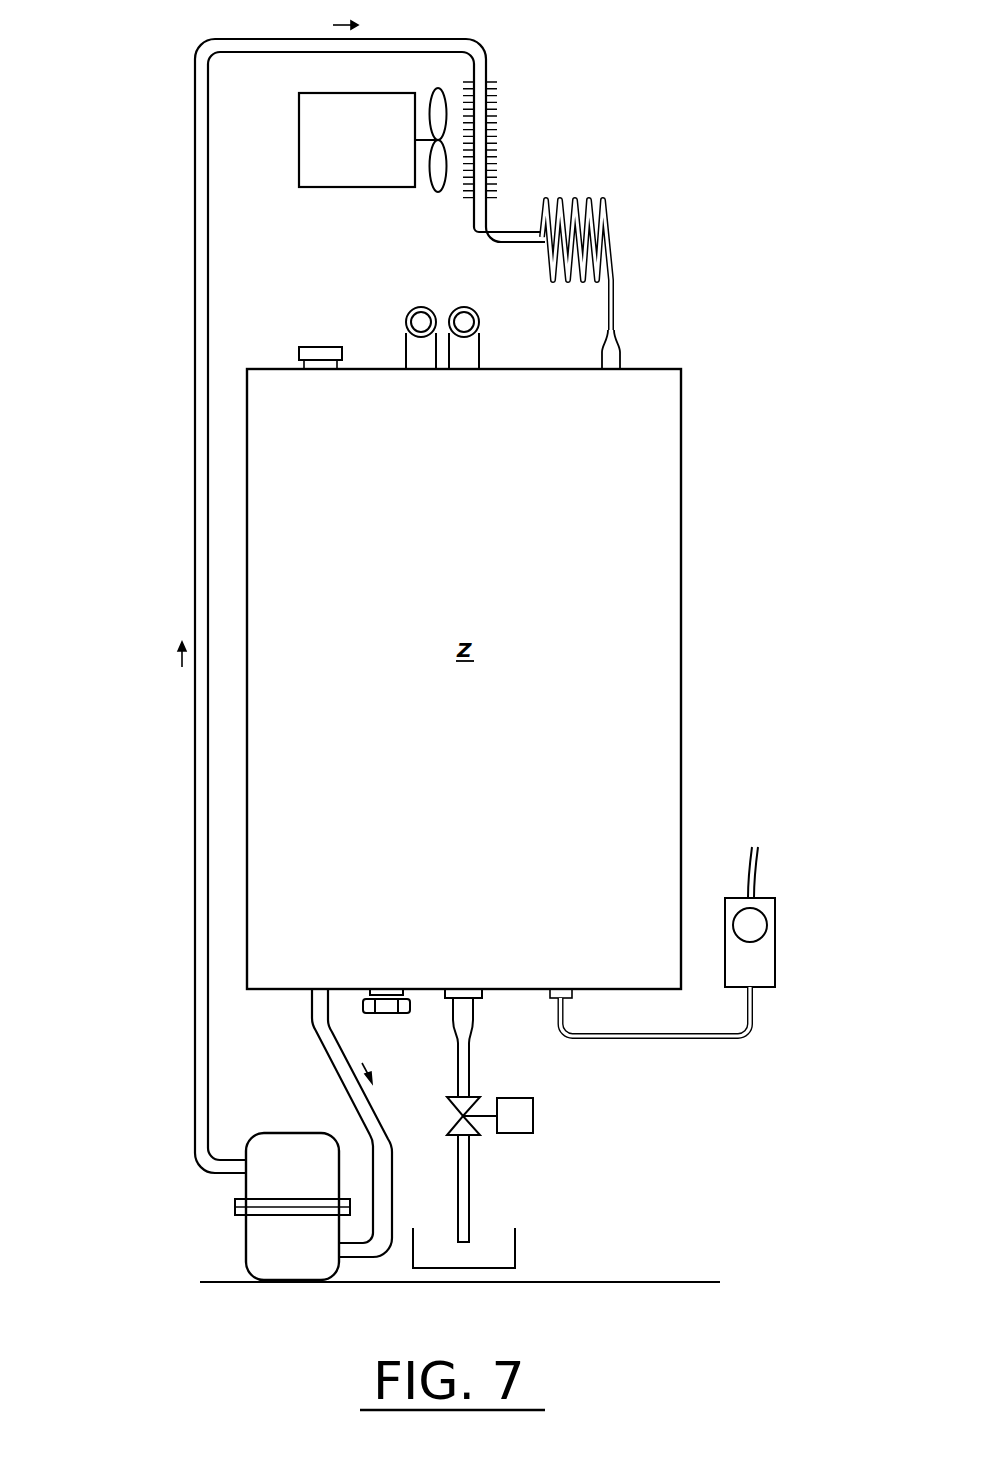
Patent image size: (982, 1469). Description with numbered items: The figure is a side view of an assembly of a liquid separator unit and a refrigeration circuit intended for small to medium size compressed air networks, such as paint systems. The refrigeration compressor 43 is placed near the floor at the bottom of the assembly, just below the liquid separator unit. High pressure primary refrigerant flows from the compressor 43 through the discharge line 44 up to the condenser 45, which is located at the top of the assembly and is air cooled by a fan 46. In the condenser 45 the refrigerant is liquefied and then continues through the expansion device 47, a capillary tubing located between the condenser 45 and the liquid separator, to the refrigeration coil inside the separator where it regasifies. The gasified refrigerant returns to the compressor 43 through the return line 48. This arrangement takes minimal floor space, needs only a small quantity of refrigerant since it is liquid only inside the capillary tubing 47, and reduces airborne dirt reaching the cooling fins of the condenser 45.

The refrigeration compressor 43 is at (275, 1228).
The discharge line 44 is at (202, 924).
The condenser 45 is at (480, 117).
The fan 46 is at (382, 174).
The expansion device 47 is at (607, 217).
The return line 48 is at (345, 1077).